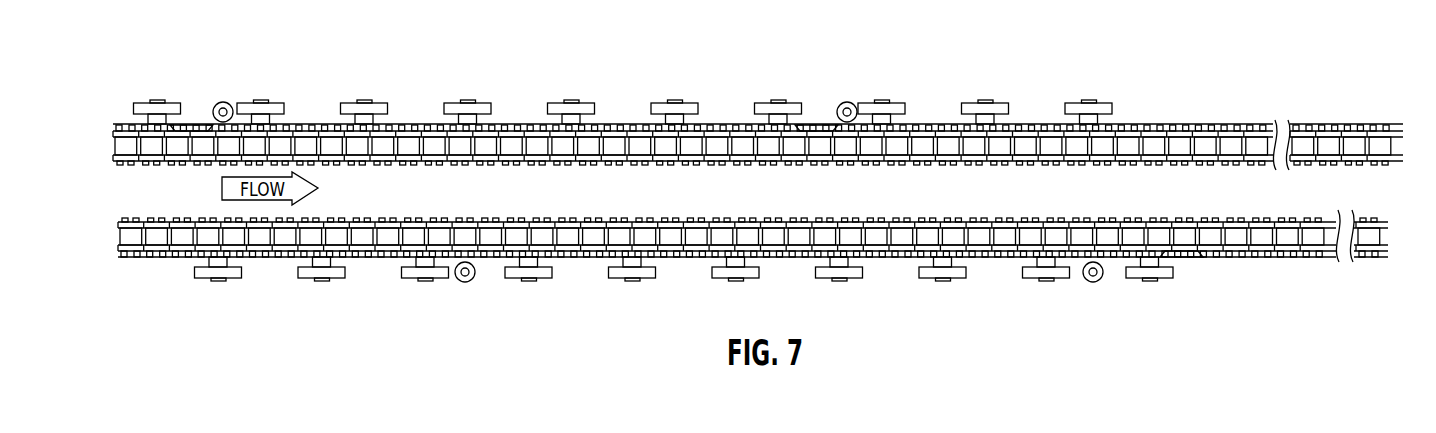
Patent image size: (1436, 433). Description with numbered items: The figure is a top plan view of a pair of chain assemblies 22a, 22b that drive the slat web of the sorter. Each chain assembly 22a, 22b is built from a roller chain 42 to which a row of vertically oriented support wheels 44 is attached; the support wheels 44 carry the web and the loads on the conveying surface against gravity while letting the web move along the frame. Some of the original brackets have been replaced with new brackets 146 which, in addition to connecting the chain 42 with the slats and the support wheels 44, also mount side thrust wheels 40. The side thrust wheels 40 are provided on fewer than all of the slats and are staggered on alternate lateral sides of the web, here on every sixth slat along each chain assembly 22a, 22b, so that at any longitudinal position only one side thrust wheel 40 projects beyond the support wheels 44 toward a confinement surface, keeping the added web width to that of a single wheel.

The chain assembly 22a is at (738, 124).
The chain assembly 22b is at (776, 255).
The roller chain 42 is at (658, 160).
The support wheel 44 is at (491, 103).
The side thrust wheel 40 is at (228, 104).
The bracket 146 is at (185, 123).